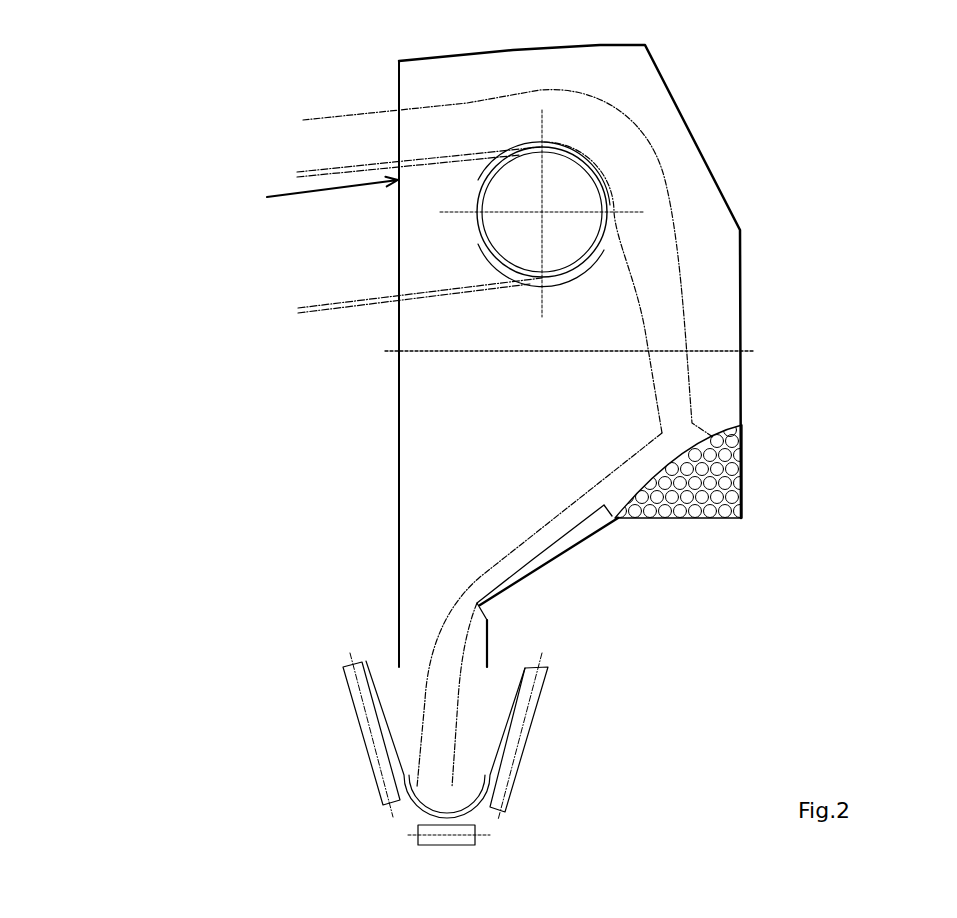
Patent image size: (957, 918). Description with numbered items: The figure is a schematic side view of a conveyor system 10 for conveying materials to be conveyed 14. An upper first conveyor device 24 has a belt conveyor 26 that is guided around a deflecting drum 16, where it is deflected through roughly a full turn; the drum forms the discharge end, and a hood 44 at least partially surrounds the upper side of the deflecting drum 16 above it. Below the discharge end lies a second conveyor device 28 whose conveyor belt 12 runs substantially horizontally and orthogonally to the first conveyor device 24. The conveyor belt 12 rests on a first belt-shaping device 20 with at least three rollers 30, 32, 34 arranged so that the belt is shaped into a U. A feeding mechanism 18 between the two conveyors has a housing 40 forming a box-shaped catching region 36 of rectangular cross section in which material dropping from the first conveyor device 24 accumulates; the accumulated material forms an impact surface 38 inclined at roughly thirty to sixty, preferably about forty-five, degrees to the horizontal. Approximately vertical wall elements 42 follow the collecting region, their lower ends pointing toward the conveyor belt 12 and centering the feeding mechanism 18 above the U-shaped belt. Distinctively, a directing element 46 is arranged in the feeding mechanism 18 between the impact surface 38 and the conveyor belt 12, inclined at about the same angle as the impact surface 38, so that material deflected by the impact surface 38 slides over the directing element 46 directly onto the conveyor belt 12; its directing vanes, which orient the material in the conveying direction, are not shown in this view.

The conveyor system 10 is at (158, 113).
The conveyor belt 12 is at (417, 812).
The materials to be conveyed 14 is at (643, 197).
The deflecting drum 16 is at (543, 170).
The feeding mechanism 18 is at (374, 383).
The first belt-shaping device 20 is at (589, 701).
The first conveyor device 24 is at (380, 157).
The belt conveyor 26 is at (308, 168).
The second conveyor device 28 is at (260, 636).
The roller 30 is at (369, 764).
The roller 32 is at (523, 740).
The roller 34 is at (457, 838).
The catching region 36 is at (705, 492).
The impact surface 38 is at (732, 423).
The housing 40 is at (400, 453).
The wall elements 42 is at (398, 632).
The hood 44 is at (692, 132).
The directing element 46 is at (532, 575).